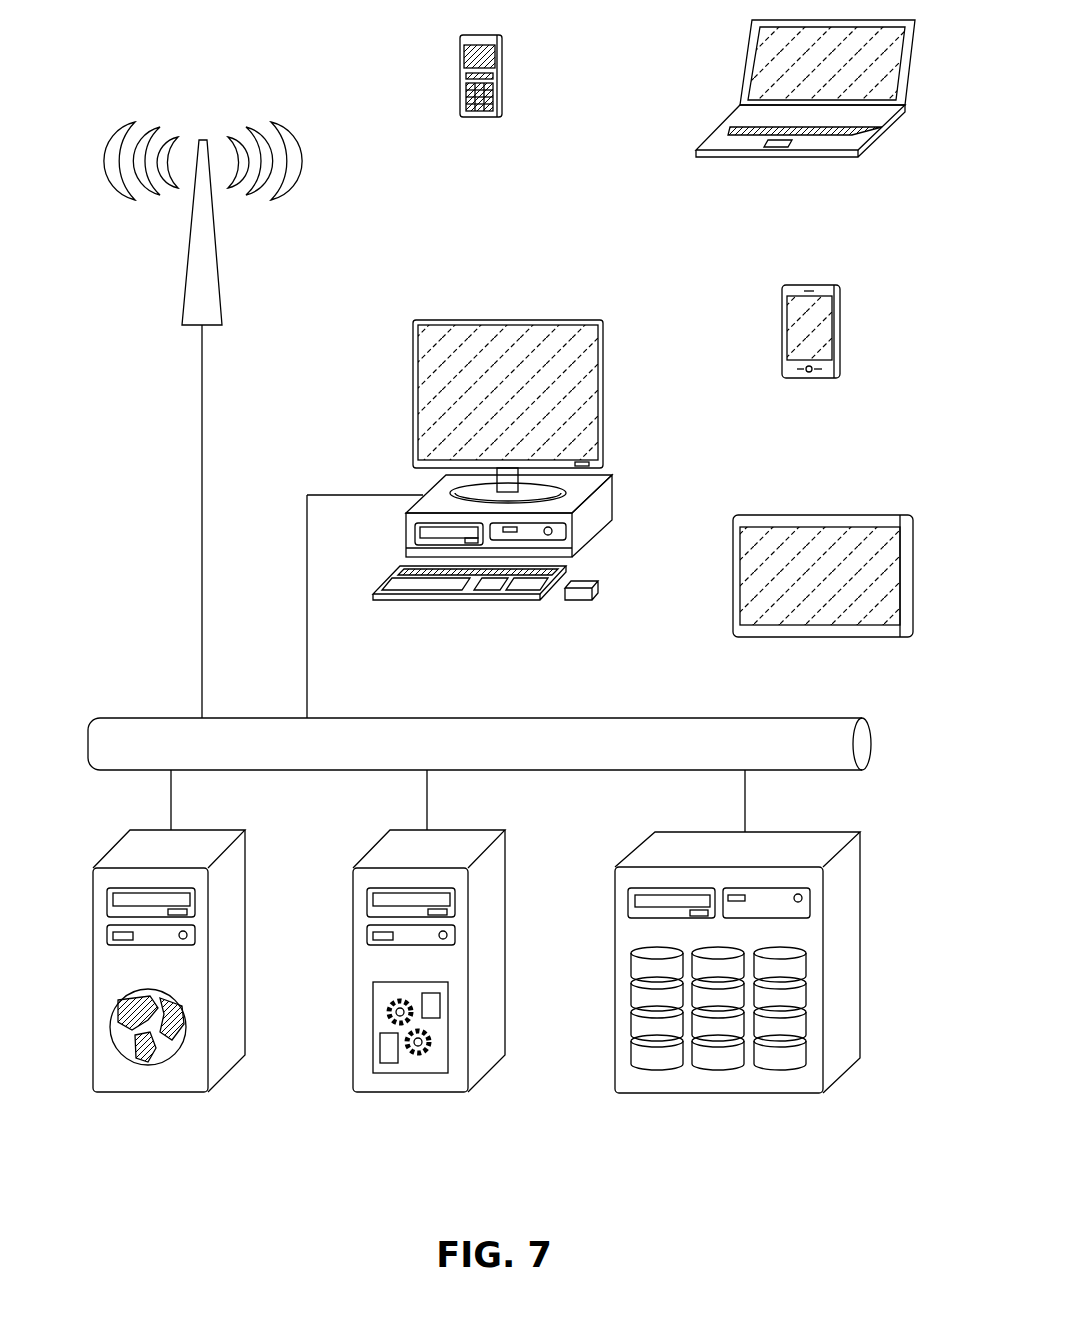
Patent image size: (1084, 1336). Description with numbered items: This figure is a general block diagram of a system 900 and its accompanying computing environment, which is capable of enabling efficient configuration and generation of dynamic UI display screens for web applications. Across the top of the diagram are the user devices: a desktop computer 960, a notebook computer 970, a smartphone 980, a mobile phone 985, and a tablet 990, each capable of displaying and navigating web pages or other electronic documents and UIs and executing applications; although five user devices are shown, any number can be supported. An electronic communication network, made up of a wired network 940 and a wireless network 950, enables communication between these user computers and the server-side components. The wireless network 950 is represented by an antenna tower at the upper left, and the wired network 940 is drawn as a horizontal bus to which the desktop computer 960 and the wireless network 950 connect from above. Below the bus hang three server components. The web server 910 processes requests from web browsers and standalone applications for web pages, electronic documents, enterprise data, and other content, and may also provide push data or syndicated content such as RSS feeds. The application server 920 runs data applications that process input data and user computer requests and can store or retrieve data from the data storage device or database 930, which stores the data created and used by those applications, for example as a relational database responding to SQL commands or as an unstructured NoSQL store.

The system 900 is at (160, 55).
The web server 910 is at (158, 1083).
The application server 920 is at (413, 1083).
The data storage device or database 930 is at (705, 1075).
The wired network 940 is at (479, 744).
The wireless network 950 is at (233, 232).
The desktop computer 960 is at (490, 608).
The notebook computer 970 is at (796, 168).
The smartphone 980 is at (815, 393).
The mobile phone 985 is at (485, 135).
The tablet 990 is at (817, 630).